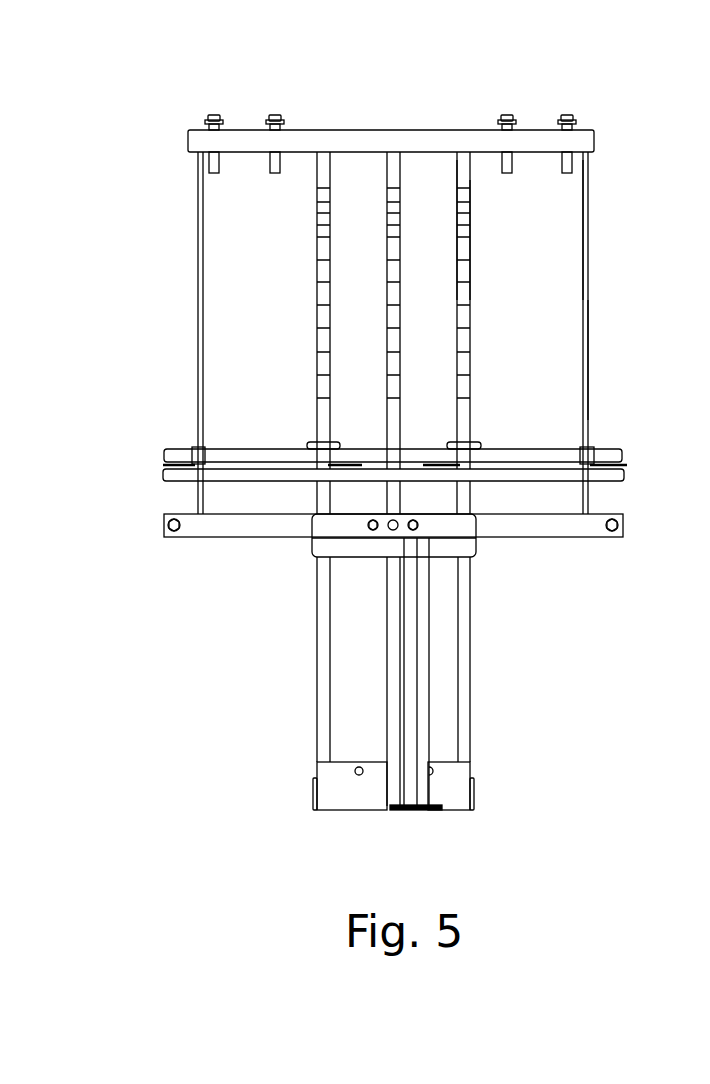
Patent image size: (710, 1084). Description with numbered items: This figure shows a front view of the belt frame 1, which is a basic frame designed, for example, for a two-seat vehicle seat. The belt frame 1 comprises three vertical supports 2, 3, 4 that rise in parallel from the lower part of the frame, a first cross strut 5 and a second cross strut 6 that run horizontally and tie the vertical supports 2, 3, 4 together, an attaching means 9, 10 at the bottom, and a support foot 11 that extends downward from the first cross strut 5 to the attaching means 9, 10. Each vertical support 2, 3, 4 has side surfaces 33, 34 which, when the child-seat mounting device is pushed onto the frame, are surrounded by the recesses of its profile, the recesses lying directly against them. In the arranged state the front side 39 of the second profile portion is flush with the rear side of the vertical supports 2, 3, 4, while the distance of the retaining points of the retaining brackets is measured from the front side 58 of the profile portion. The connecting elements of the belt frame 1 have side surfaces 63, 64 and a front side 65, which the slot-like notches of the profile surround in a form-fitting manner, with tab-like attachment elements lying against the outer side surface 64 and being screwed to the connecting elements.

The belt frame 1 is at (293, 811).
The vertical support 2 is at (320, 318).
The vertical support 3 is at (390, 318).
The vertical support 4 is at (461, 318).
The first cross strut 5 is at (240, 538).
The second cross strut 6 is at (536, 140).
The attaching means 9 is at (427, 808).
The attaching means 10 is at (352, 802).
The support foot 11 is at (423, 620).
The side surface 33 is at (473, 256).
The side surface 34 is at (453, 270).
The front side of the second profile portion 39 is at (540, 455).
The front side of the profile portion 58 is at (535, 472).
The side surface of the connecting element 63 is at (578, 218).
The outer side surface of the connecting element 64 is at (197, 318).
The front side of the connecting element 65 is at (590, 343).